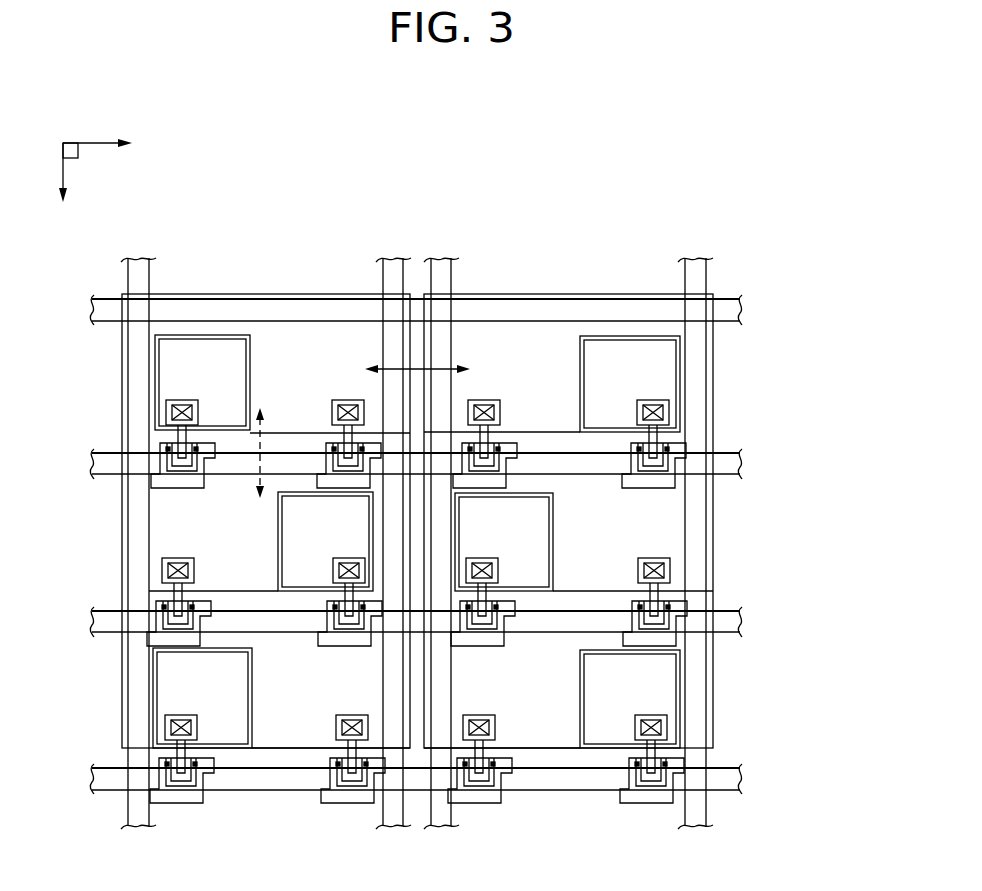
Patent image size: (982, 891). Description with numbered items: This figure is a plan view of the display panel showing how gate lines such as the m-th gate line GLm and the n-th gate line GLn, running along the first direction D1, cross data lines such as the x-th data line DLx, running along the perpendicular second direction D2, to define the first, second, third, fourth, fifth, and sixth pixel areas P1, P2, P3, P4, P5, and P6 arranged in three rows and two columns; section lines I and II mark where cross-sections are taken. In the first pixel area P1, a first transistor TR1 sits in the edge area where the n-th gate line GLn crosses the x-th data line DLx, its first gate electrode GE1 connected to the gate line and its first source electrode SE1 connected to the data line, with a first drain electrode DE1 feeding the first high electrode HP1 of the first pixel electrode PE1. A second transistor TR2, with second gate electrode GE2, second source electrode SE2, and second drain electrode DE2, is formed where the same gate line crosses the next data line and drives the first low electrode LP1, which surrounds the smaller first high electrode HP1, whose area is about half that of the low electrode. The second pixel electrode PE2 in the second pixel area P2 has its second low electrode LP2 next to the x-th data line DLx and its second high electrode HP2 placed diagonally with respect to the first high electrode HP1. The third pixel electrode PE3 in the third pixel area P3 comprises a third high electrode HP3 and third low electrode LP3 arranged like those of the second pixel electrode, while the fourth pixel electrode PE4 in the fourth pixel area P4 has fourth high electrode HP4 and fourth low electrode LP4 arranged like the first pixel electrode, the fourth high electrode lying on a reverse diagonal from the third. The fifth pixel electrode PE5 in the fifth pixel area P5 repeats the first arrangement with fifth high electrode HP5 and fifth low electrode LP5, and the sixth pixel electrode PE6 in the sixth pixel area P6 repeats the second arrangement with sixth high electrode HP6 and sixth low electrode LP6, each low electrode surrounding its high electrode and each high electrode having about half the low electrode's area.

The m-th gate line GLm is at (744, 310).
The n-th gate line GLn is at (744, 464).
The x-th data line DLx is at (139, 828).
The first pixel area P1 is at (299, 379).
The second pixel area P2 is at (233, 532).
The third pixel area P3 is at (511, 354).
The fourth pixel area P4 is at (624, 534).
The fifth pixel area P5 is at (303, 701).
The sixth pixel area P6 is at (553, 701).
The first pixel electrode PE1 is at (268, 257).
The second pixel electrode PE2 is at (64, 532).
The third pixel electrode PE3 is at (628, 257).
The fourth pixel electrode PE4 is at (768, 532).
The fifth pixel electrode PE5 is at (318, 843).
The sixth pixel electrode PE6 is at (603, 843).
The first high electrode HP1 is at (205, 348).
The second high electrode HP2 is at (307, 542).
The third high electrode HP3 is at (610, 352).
The fourth high electrode HP4 is at (527, 543).
The fifth high electrode HP5 is at (237, 737).
The sixth high electrode HP6 is at (593, 738).
The first low electrode LP1 is at (262, 350).
The second low electrode LP2 is at (155, 570).
The third low electrode LP3 is at (553, 352).
The fourth low electrode LP4 is at (678, 572).
The fifth low electrode LP5 is at (295, 737).
The sixth low electrode LP6 is at (535, 738).
The first transistor TR1 is at (116, 433).
The second transistor TR2 is at (329, 331).
The first gate electrode GE1 is at (163, 478).
The first source electrode SE1 is at (170, 462).
The first drain electrode DE1 is at (173, 413).
The second gate electrode GE2 is at (327, 450).
The second source electrode SE2 is at (337, 447).
The second drain electrode DE2 is at (348, 400).
The first direction D1 is at (116, 145).
The second direction D2 is at (65, 186).
The section line I-I' I is at (260, 455).
The section line II-II' II is at (420, 370).